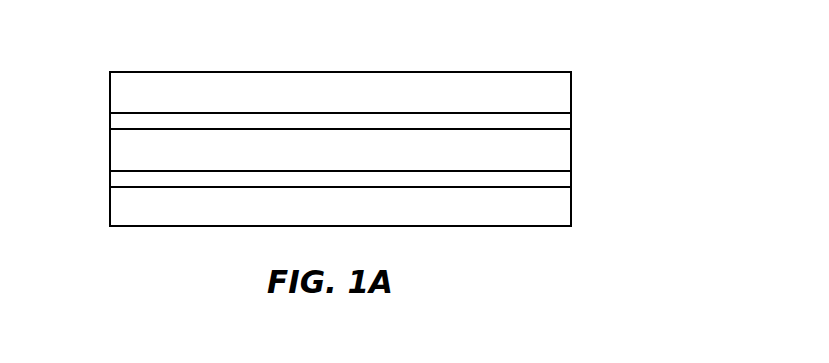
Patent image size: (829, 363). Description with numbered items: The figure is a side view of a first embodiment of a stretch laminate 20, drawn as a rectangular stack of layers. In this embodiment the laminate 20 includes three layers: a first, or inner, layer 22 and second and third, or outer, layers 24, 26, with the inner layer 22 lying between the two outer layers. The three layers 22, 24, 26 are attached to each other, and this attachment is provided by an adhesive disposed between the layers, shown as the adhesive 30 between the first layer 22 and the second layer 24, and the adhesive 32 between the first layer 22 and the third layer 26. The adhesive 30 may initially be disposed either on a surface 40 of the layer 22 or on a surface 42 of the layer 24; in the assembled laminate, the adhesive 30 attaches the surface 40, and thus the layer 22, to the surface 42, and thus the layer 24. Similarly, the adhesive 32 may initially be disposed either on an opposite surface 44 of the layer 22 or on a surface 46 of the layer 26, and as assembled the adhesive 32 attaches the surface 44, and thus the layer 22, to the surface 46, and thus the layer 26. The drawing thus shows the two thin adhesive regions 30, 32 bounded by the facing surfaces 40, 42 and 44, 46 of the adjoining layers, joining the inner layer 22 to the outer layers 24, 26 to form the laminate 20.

The stretch laminate 20 is at (393, 45).
The first layer 22 is at (558, 157).
The second layer 24 is at (558, 95).
The third layer 26 is at (558, 218).
The adhesive 30 is at (118, 120).
The adhesive 32 is at (118, 175).
The surface of the first layer 40 is at (545, 128).
The surface of the second layer 42 is at (550, 124).
The opposite surface of the first layer 44 is at (550, 174).
The surface of the third layer 46 is at (545, 183).